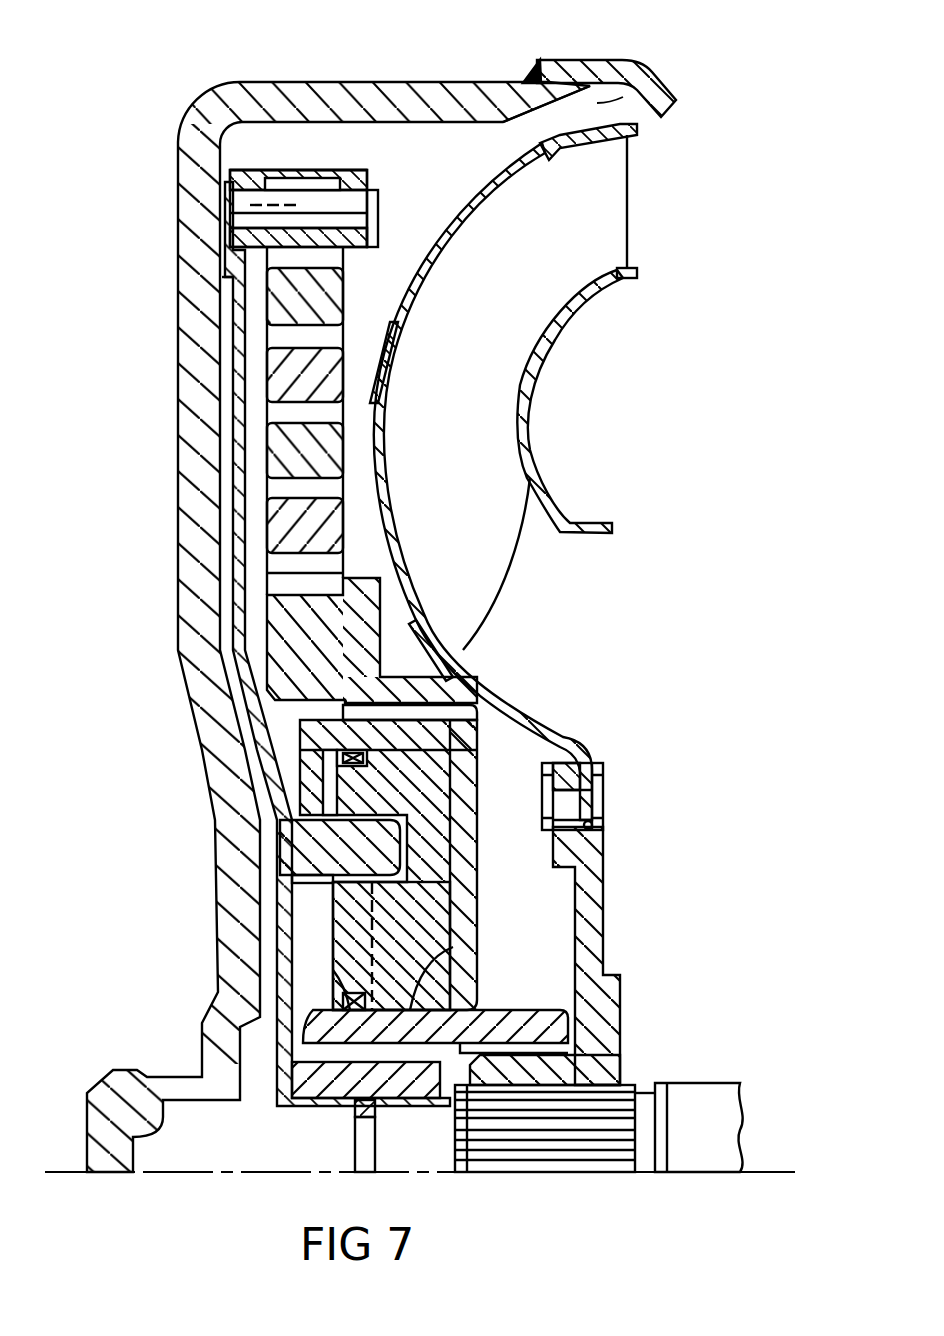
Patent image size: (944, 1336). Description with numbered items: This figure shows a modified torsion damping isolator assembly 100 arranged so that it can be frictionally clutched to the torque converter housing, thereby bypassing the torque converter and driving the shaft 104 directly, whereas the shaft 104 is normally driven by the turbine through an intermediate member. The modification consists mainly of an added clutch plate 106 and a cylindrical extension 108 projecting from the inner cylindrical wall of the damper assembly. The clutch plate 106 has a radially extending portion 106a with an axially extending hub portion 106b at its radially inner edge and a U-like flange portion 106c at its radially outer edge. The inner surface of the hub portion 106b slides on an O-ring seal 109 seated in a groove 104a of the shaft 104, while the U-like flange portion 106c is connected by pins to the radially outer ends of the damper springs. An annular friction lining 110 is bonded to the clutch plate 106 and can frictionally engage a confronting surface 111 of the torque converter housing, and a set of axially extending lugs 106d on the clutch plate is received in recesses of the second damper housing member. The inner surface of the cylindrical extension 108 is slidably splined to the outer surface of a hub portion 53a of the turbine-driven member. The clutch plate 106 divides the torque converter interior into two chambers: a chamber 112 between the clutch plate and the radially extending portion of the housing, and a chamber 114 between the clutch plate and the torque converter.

The hub portion 53a is at (622, 1020).
The torsion damping isolator assembly 100 is at (403, 162).
The shaft 104 is at (718, 1085).
The groove 104a is at (365, 1160).
The clutch plate 106 is at (230, 346).
The radially extending portion 106a is at (245, 495).
The axially extending hub portion 106b is at (300, 1100).
The U-like flange portion 106c is at (350, 168).
The axially extending lugs 106d is at (335, 872).
The cylindrical extension 108 is at (545, 1052).
The O-ring seal 109 is at (376, 1108).
The annular friction lining 110 is at (232, 208).
The confronting surface 111 is at (228, 288).
The chamber 112 is at (222, 440).
The chamber 114 is at (474, 152).